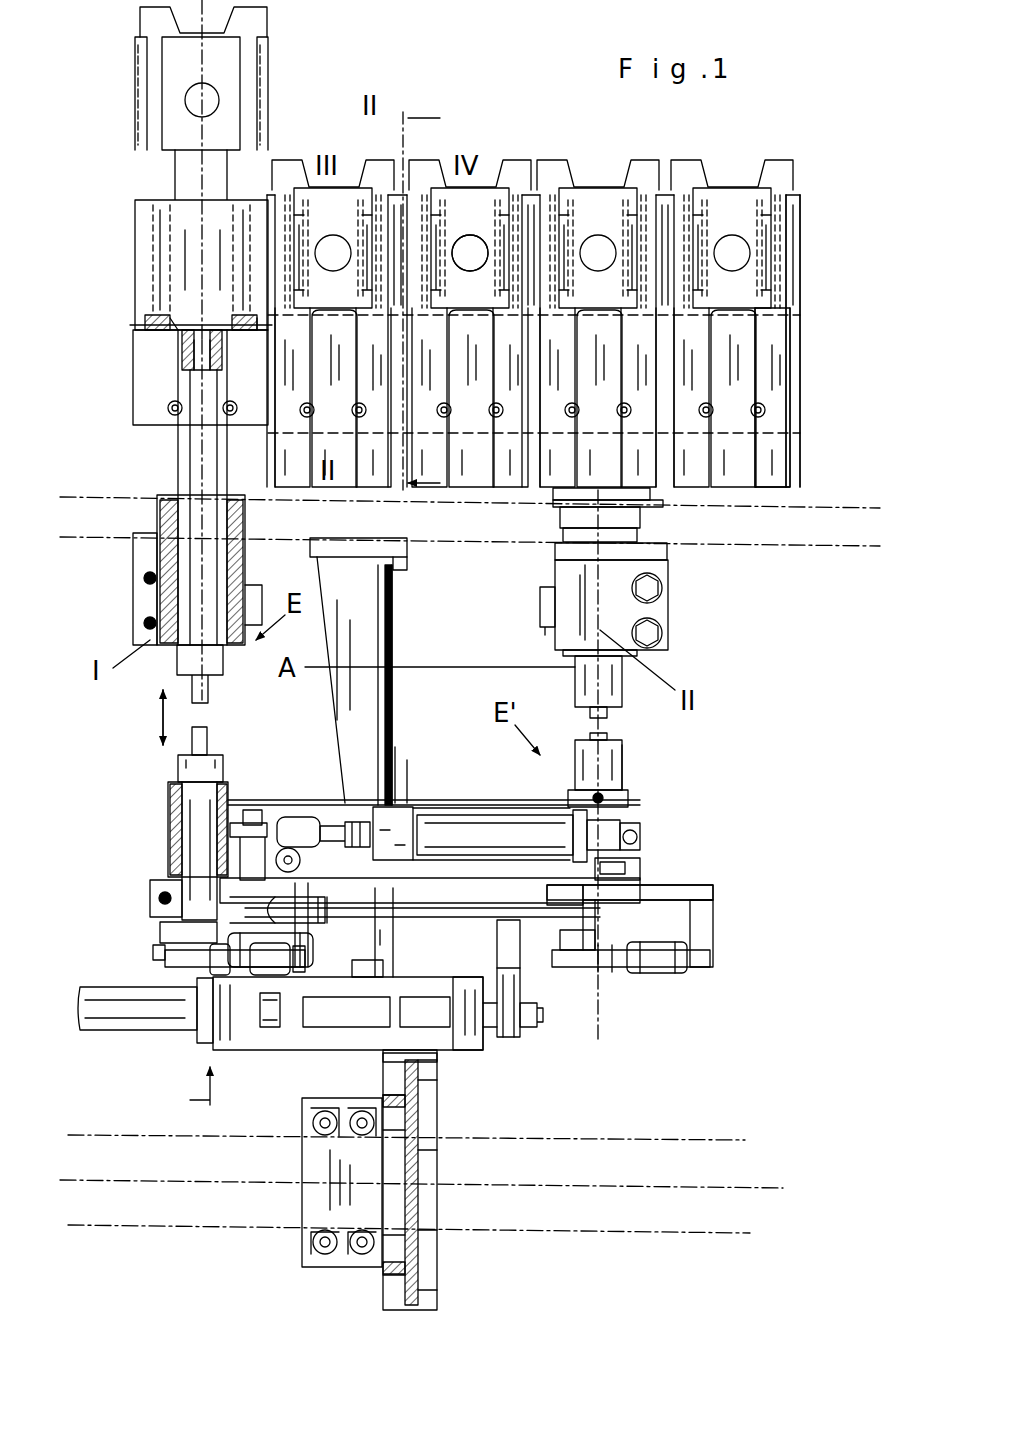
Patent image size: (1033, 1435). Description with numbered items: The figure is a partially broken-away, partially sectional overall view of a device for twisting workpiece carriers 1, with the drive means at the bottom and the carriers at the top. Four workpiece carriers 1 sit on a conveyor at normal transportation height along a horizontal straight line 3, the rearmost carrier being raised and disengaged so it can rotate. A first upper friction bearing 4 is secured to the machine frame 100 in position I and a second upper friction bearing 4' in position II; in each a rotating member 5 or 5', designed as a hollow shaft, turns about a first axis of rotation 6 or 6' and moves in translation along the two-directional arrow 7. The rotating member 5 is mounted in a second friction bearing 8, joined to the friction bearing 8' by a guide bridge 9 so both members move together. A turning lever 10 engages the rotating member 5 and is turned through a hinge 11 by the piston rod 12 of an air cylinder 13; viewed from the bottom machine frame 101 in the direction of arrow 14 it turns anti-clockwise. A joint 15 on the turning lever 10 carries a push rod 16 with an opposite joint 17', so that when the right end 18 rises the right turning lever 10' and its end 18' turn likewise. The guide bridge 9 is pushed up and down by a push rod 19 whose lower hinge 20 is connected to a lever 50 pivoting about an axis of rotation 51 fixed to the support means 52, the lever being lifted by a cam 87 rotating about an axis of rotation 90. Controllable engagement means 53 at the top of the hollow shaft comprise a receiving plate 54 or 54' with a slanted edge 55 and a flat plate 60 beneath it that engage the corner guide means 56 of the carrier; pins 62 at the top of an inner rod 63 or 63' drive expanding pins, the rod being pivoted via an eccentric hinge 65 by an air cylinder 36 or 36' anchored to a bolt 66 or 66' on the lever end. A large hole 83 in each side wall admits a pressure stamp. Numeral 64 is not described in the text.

The workpiece carrier 1 is at (433, 156).
The straight line (transportation direction) 3 is at (846, 260).
The first upper friction bearing 4 is at (175, 599).
The second upper friction bearing 4' is at (627, 645).
The rotating member 5 is at (224, 761).
The rotating member 5' is at (622, 761).
The first axis of rotation 6 is at (175, 520).
The first axis of rotation 6' is at (668, 771).
The two-directional arrow 7 is at (158, 712).
The second friction bearing 8 is at (178, 851).
The friction bearing 8' is at (574, 788).
The guide bridge 9 is at (447, 808).
The turning lever 10 is at (141, 882).
The right turning lever 10' is at (649, 920).
The hinge 11 is at (262, 812).
The piston rod 12 is at (338, 822).
The air cylinder 13 is at (470, 830).
The arrow 14 is at (184, 1091).
The joint 15 is at (253, 962).
The push rod 16 is at (475, 917).
The joint 17' is at (668, 874).
The right end 18 is at (287, 906).
The right end 18' is at (686, 888).
The push rod 19 is at (526, 960).
The lower hinge 20 is at (540, 1022).
The air cylinder 36 is at (236, 1004).
The air cylinder 36' is at (632, 980).
The lever 50 is at (470, 1050).
The axis of rotation 51 is at (90, 985).
The support means 52 is at (375, 702).
The engagement means 53 is at (172, 334).
The receiving plate 54 is at (176, 308).
The receiving plate 54' is at (638, 523).
The slanted edge 55 is at (555, 500).
The corner guide means 56 is at (285, 452).
The flat plate 60 is at (258, 333).
The pin 62 is at (187, 342).
The rod 63 is at (225, 723).
The rod 63' is at (573, 687).
The bearing 64 is at (160, 930).
The hinge 65 is at (162, 950).
The bolt 66 is at (391, 932).
The bolt 66' is at (691, 933).
The large hole 83 is at (471, 243).
The cam 87 is at (440, 1098).
The axis of rotation 90 is at (205, 1190).
The machine frame 100 is at (812, 535).
The bottom machine frame 101 is at (685, 1165).